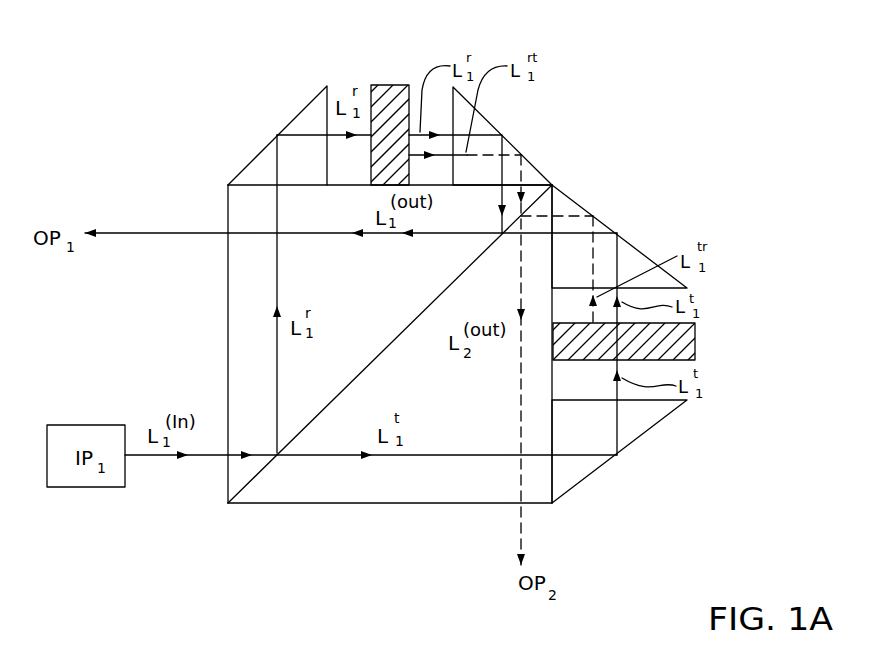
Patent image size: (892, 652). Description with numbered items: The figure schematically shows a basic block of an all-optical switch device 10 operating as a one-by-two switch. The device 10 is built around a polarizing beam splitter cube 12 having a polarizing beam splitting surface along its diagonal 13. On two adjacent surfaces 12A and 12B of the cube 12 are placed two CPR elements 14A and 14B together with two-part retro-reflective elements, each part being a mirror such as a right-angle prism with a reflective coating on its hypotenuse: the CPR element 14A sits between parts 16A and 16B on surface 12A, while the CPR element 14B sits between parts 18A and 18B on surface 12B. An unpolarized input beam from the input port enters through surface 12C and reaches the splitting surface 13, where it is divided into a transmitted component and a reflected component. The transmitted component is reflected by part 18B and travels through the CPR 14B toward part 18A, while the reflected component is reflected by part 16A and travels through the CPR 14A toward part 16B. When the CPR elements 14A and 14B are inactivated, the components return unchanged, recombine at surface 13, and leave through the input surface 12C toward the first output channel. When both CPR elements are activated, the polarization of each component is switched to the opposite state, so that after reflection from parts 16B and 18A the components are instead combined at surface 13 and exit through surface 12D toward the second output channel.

The all-optical switch device 10 is at (231, 86).
The polarizing beam splitter cube 12 is at (233, 220).
The surface of the beam splitter cube 12A is at (257, 184).
The surface of the beam splitter cube 12B is at (562, 198).
The input surface of the beam splitter 12C is at (228, 490).
The surface of the beam splitter 12D is at (362, 504).
The polarizing beam splitting surface 13 is at (266, 467).
The CPR element 14A is at (387, 85).
The CPR element 14B is at (696, 338).
The part of retro-reflective element 16A is at (297, 113).
The part of retro-reflective element 16B is at (528, 160).
The part of retro-reflective element 18A is at (624, 242).
The part of retro-reflective element 18B is at (633, 442).